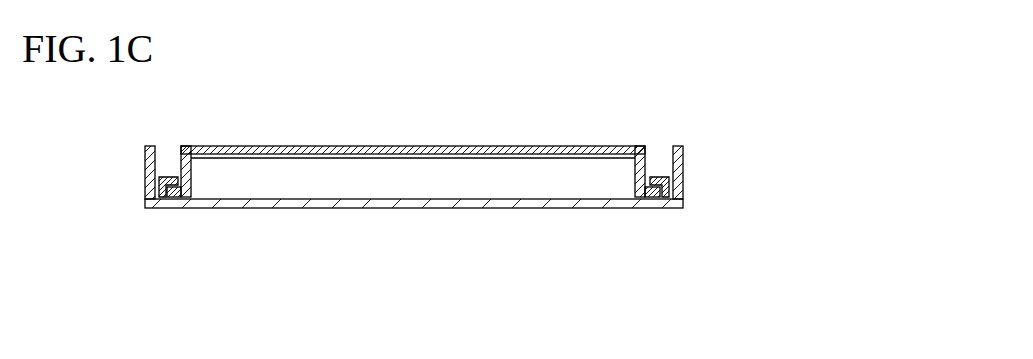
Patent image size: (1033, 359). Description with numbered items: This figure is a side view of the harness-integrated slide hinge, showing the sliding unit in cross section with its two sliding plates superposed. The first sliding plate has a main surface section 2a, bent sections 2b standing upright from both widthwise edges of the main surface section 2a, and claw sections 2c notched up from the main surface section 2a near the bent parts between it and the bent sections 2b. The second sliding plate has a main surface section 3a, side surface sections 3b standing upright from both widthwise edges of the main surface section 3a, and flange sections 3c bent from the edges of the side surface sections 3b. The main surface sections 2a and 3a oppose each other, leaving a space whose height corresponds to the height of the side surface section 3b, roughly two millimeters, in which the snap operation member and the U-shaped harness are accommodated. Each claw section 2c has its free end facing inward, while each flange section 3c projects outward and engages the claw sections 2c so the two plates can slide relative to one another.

The main surface section 2a is at (411, 209).
The bent sections 2b is at (147, 176).
The claw sections 2c is at (173, 178).
The main surface section 3a is at (393, 145).
The side surface sections 3b is at (179, 158).
The flange sections 3c is at (175, 198).